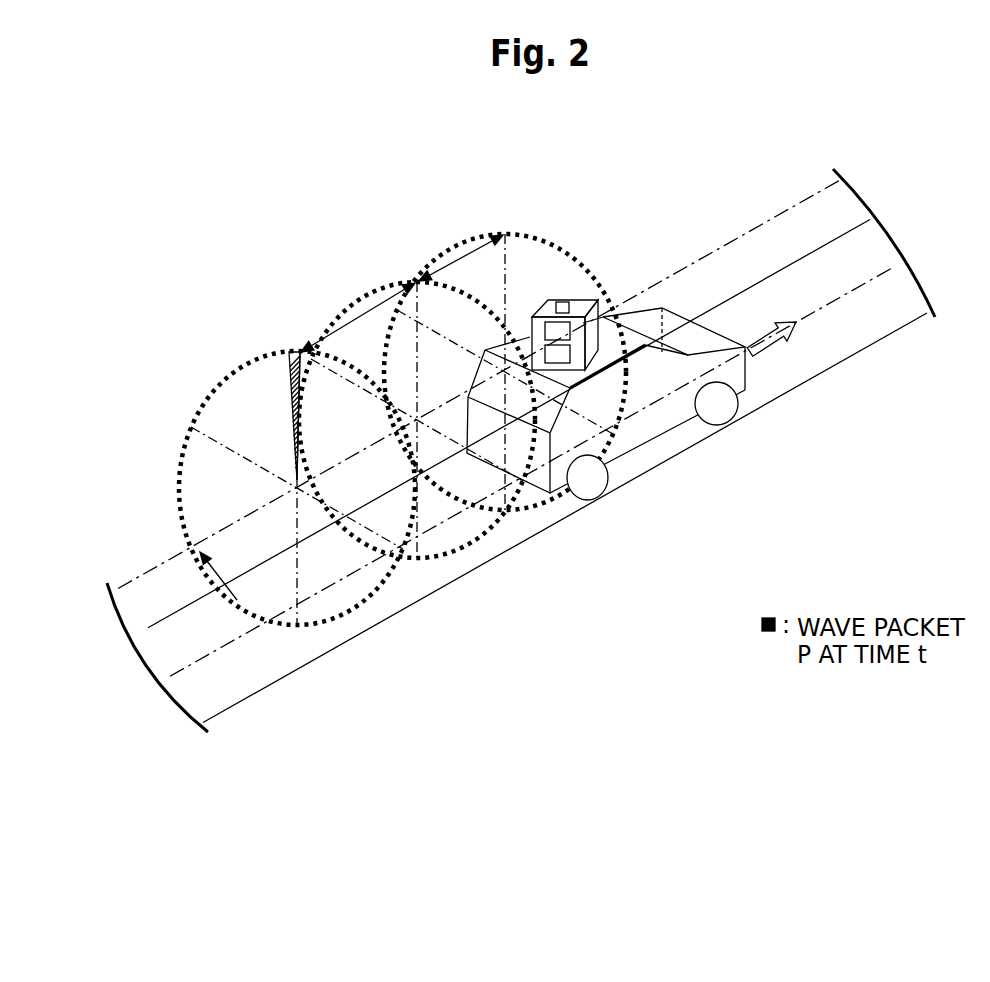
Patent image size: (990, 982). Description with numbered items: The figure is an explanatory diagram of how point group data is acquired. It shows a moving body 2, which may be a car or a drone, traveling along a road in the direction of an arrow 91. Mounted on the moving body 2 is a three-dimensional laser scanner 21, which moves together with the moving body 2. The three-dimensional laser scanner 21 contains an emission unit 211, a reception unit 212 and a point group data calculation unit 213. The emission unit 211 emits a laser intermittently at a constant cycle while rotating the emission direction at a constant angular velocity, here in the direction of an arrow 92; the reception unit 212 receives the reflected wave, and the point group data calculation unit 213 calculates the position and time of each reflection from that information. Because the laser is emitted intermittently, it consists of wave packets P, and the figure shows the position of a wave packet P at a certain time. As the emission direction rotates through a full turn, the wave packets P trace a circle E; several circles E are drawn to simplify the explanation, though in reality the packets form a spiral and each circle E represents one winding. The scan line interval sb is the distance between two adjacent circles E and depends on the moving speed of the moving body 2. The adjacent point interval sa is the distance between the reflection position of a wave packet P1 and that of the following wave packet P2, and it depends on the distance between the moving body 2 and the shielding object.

The moving body 2 is at (645, 310).
The three-dimensional laser scanner 21 is at (532, 316).
The emission unit 211 is at (569, 330).
The reception unit 212 is at (560, 364).
The point group data calculation unit 213 is at (562, 302).
The arrow 91 is at (772, 347).
The arrow 92 is at (200, 552).
The wave packet P is at (203, 403).
The wave packet P1 is at (294, 351).
The wave packet P2 is at (306, 350).
The adjacent point interval sa is at (290, 407).
The scan line interval sb is at (457, 258).
The circle E is at (430, 236).